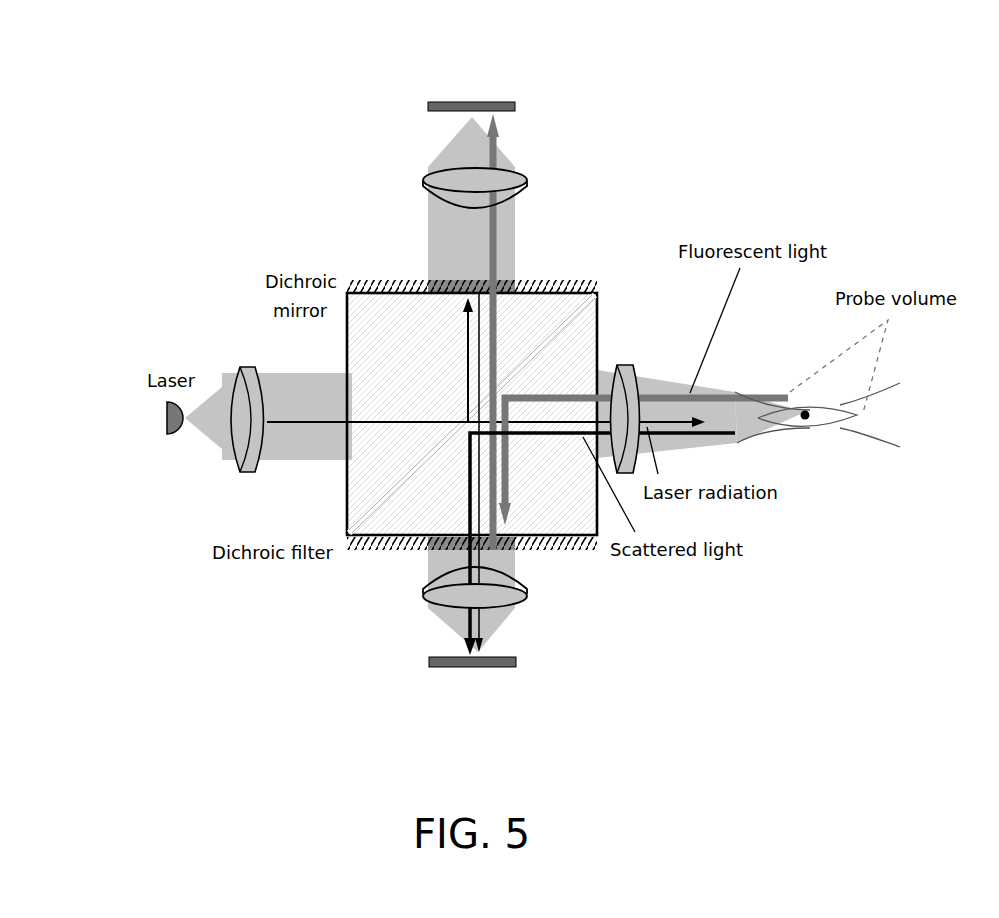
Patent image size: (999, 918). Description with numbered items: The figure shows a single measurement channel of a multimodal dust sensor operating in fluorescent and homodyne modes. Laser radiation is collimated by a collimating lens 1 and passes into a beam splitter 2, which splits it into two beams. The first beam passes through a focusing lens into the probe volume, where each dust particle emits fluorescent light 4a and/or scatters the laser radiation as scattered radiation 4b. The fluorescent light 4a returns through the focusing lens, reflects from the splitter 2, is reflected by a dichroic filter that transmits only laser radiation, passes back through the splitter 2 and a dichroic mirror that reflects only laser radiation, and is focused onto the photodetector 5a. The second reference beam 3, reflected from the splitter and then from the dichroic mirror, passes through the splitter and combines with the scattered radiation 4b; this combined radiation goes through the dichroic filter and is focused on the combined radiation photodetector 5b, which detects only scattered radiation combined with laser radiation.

The collimating lens 1 is at (237, 430).
The beam splitter 2 is at (515, 332).
The second reference beam 3 is at (370, 360).
The fluorescent light 4a is at (643, 448).
The scattered radiation 4b is at (605, 544).
The photodetector 5a is at (471, 94).
The combined radiation photodetector 5b is at (472, 676).